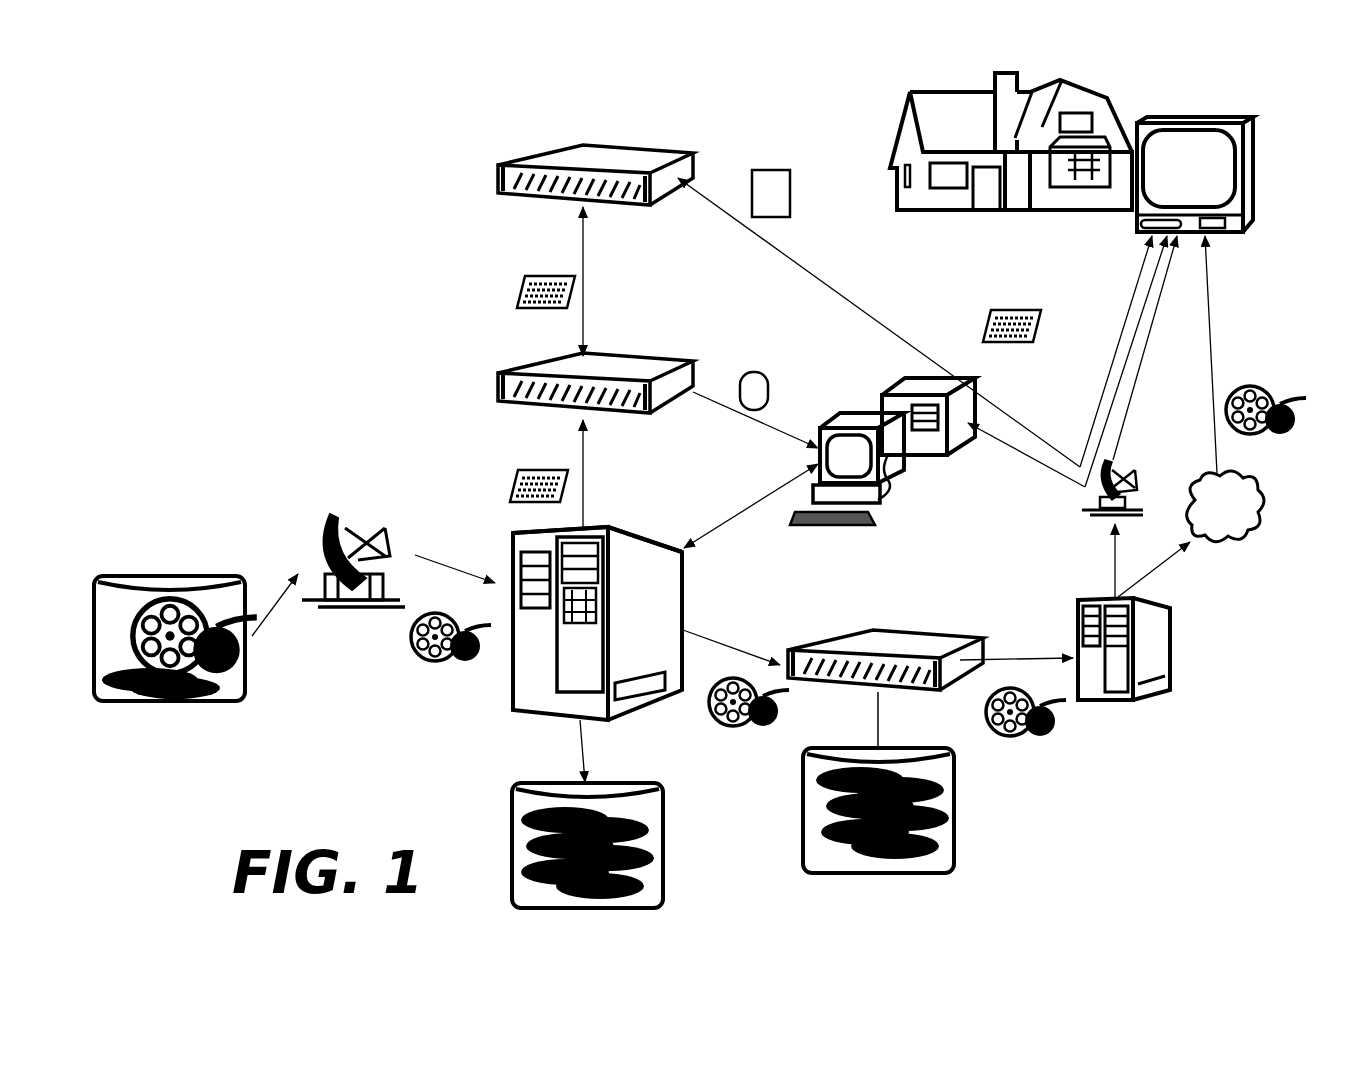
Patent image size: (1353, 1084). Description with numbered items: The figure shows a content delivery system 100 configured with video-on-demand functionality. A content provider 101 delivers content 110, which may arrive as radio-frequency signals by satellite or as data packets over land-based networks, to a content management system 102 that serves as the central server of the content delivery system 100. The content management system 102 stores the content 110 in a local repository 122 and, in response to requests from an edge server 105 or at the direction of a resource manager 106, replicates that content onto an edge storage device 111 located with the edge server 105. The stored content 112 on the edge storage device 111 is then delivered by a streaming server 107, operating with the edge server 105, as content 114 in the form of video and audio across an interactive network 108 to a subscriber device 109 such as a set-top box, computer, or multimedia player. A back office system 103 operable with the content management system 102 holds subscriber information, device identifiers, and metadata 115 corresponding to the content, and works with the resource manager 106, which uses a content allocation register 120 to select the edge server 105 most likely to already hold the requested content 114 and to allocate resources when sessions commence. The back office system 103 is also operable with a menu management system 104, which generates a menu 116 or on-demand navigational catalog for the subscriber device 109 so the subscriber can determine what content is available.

The content delivery system 100 is at (254, 446).
The content provider 101 is at (228, 677).
The content management system 102 is at (627, 653).
The back office system 103 is at (533, 397).
The menu management system 104 is at (520, 190).
The edge server 105 is at (890, 673).
The resource manager 106 is at (923, 448).
The streaming server 107 is at (1145, 657).
The interactive network 108 is at (1253, 537).
The subscriber device 109 is at (1252, 228).
The content 110 is at (438, 662).
The edge storage device 111 is at (953, 817).
The stored content 112 is at (827, 783).
The content 114 is at (1250, 385).
The metadata 115 is at (510, 487).
The menu 116 is at (765, 182).
The content allocation register 120 is at (758, 391).
The local repository 122 is at (510, 842).